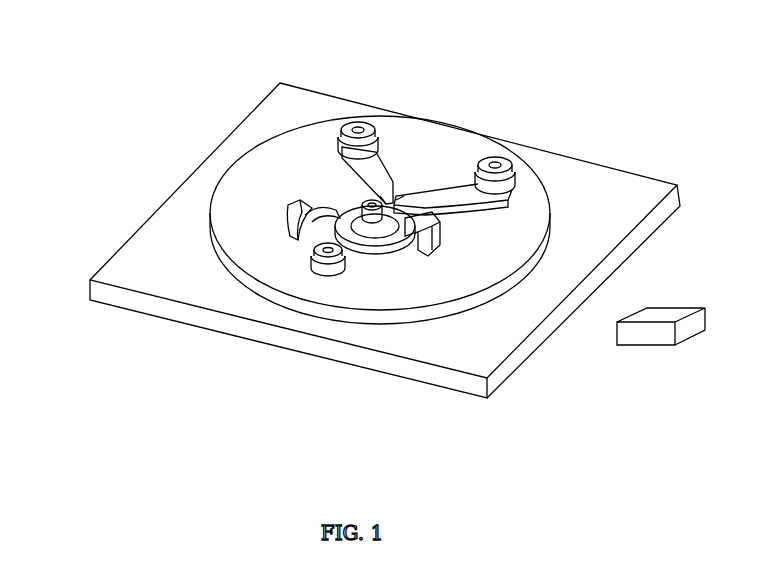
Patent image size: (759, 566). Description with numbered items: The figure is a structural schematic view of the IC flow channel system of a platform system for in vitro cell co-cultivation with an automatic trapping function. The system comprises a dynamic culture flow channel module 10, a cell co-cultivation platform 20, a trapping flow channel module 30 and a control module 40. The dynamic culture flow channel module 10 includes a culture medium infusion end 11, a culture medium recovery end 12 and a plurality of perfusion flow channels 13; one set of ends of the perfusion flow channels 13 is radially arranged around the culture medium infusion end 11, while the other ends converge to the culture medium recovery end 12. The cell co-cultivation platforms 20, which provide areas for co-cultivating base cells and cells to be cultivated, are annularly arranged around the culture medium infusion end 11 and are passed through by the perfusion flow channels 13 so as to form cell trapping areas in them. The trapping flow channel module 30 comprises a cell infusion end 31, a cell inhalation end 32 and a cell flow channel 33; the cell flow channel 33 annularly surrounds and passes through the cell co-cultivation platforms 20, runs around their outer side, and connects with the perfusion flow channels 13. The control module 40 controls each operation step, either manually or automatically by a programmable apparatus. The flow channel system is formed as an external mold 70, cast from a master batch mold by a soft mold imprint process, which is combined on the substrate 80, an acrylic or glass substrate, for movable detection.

The dynamic culture flow channel module 10 is at (82, 322).
The culture medium infusion end 11 is at (365, 240).
The culture medium recovery end 12 is at (320, 258).
The perfusion flow channels 13 is at (325, 232).
The cell co-cultivation platform 20 is at (403, 232).
The trapping flow channel module 30 is at (616, 76).
The cell infusion end 31 is at (497, 163).
The cell inhalation end 32 is at (360, 128).
The cell flow channel 33 is at (397, 255).
The control module 40 is at (683, 302).
The external mold 70 is at (247, 182).
The substrate 80 is at (163, 260).